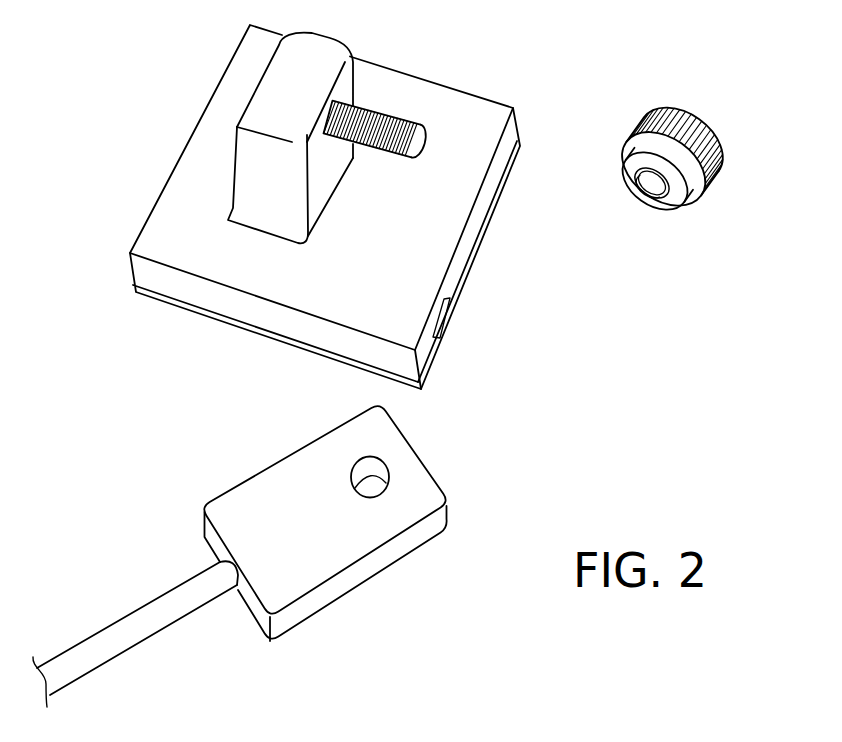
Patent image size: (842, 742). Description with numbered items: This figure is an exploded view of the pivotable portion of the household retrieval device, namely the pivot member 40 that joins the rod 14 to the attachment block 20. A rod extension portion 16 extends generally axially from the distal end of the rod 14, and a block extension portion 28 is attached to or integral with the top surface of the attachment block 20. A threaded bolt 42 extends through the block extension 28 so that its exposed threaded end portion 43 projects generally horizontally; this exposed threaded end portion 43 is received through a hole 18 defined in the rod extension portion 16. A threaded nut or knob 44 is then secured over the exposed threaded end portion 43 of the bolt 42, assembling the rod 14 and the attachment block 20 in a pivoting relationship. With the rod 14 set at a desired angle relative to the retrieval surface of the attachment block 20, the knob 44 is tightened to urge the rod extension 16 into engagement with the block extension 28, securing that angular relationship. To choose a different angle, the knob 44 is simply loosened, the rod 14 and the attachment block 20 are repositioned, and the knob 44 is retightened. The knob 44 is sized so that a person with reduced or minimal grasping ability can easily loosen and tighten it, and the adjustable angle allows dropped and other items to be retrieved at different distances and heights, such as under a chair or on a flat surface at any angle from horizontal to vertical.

The rod 14 is at (155, 602).
The rod extension portion 16 is at (288, 475).
The hole 18 is at (368, 468).
The attachment block 20 is at (415, 258).
The block extension portion 28 is at (263, 120).
The pivot member 40 is at (659, 338).
The threaded bolt 42 is at (407, 125).
The exposed threaded end portion 43 is at (422, 143).
The threaded nut or knob 44 is at (648, 123).